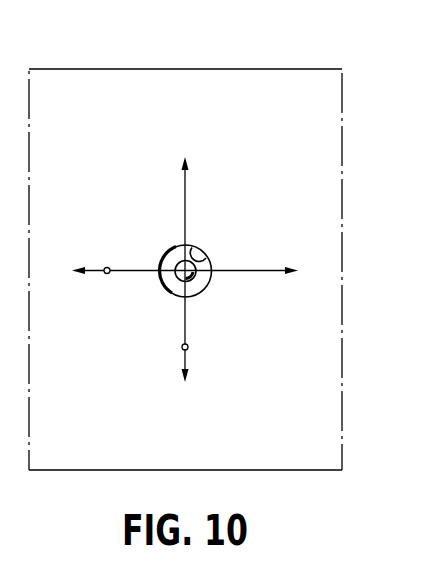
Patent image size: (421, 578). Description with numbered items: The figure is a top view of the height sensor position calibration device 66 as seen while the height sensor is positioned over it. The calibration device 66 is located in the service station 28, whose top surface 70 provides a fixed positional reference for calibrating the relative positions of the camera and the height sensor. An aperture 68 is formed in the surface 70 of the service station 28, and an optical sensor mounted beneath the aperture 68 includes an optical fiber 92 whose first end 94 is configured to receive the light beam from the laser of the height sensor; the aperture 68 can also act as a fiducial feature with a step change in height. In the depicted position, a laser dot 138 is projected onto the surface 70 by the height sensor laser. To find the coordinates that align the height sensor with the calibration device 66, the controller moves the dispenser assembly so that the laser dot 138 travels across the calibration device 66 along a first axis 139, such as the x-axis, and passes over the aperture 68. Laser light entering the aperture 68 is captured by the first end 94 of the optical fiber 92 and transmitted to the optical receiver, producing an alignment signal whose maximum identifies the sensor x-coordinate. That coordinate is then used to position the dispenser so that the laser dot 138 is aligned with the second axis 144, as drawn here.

The service station 28 is at (61, 66).
The surface 70 is at (278, 137).
The height sensor position calibration device 66 is at (180, 259).
The aperture 68 is at (207, 256).
The optical fiber 92 is at (173, 291).
The first end 94 is at (200, 290).
The laser dot 138 is at (107, 274).
The first axis 139 is at (263, 270).
The second axis 144 is at (187, 205).